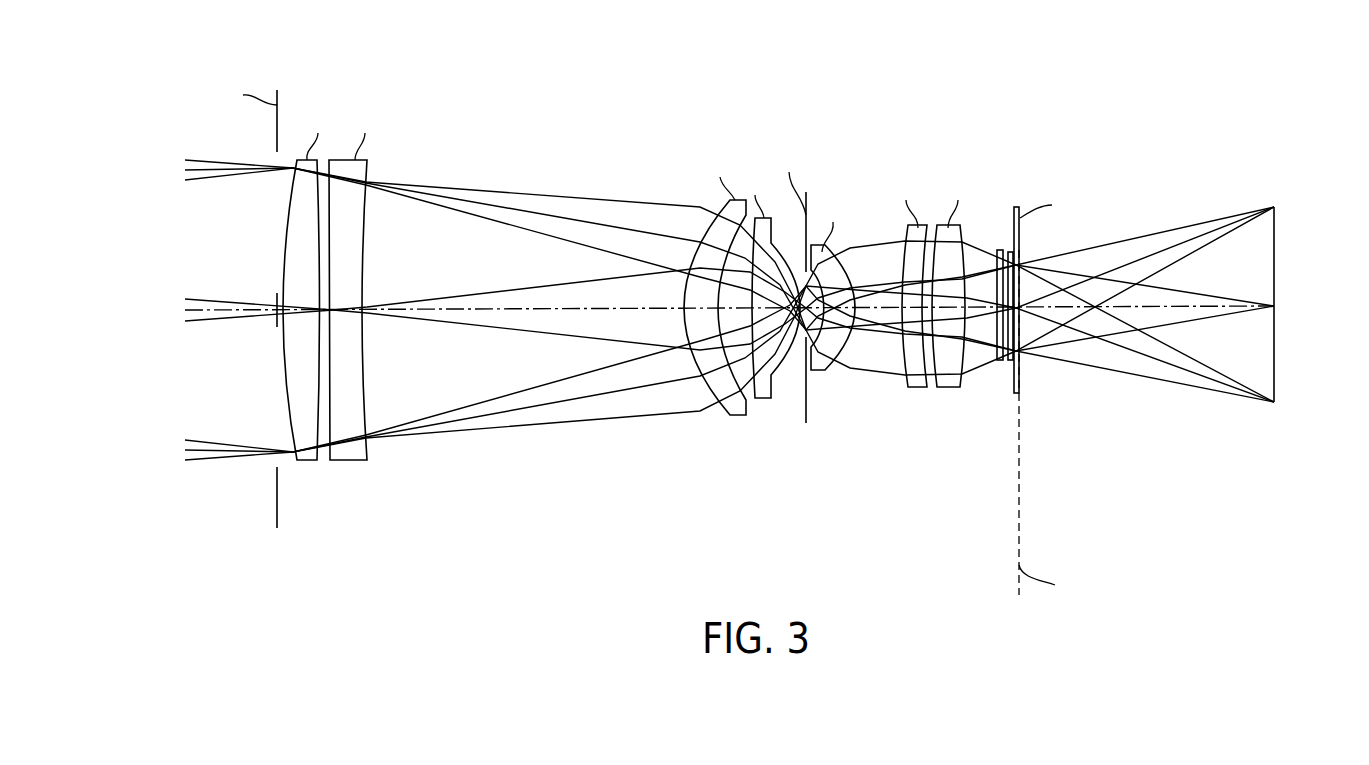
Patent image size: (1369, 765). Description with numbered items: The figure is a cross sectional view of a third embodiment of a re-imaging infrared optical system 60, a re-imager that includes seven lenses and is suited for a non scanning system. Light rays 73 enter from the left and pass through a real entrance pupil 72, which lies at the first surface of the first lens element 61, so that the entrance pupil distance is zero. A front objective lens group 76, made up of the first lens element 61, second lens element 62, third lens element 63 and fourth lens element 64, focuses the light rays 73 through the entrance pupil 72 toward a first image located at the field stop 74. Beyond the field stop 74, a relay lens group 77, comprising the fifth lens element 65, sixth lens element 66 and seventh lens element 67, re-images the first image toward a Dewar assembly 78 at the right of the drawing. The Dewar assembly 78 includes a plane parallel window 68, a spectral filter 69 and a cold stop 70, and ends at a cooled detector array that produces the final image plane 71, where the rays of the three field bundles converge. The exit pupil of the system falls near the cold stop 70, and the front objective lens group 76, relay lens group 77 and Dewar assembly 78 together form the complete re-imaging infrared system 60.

The re-imaging infrared optical system 60 is at (777, 100).
The lens element L1 61 is at (305, 462).
The lens element L2 62 is at (352, 462).
The lens element L3 63 is at (734, 417).
The lens element L4 64 is at (762, 400).
The lens element L5 65 is at (824, 365).
The lens element L6 66 is at (918, 388).
The lens element L7 67 is at (950, 388).
The plane parallel window 68 is at (999, 362).
The spectral filter 69 is at (1011, 362).
The cold stop 70 is at (1021, 388).
The final image plane 71 is at (1276, 362).
The entrance pupil 72 is at (277, 508).
The light rays 73 is at (457, 431).
The field stop 74 is at (807, 418).
The front objective lens group 76 is at (681, 95).
The relay lens group 77 is at (924, 112).
The Dewar assembly 78 is at (1098, 205).